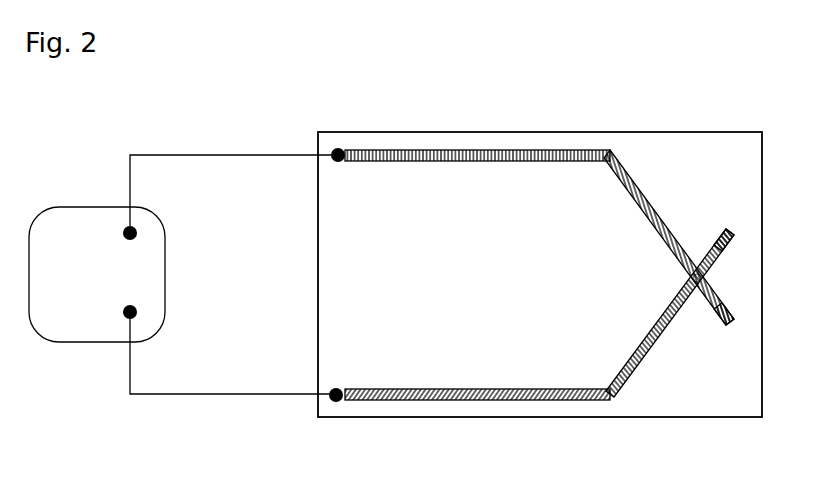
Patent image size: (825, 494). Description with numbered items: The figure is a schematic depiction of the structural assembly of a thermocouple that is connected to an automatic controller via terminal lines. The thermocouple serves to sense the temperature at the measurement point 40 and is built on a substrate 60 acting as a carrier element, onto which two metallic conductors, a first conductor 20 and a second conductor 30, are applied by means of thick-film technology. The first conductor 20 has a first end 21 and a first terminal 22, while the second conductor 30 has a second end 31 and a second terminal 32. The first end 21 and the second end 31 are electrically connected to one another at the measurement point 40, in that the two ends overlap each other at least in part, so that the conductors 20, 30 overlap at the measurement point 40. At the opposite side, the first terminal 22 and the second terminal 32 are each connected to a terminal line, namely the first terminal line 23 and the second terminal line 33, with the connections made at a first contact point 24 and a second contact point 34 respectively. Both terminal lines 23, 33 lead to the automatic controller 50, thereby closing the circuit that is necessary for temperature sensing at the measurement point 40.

The first conductor 20 is at (539, 238).
The first end 21 is at (727, 330).
The first terminal 22 is at (432, 147).
The first terminal line 23 is at (196, 151).
The first contact point 24 is at (333, 146).
The second conductor 30 is at (539, 313).
The second end 31 is at (727, 226).
The second terminal 32 is at (398, 404).
The second terminal line 33 is at (193, 399).
The second contact point 34 is at (333, 404).
The measurement point 40 is at (712, 278).
The controller 50 is at (77, 350).
The substrate 60 is at (648, 172).